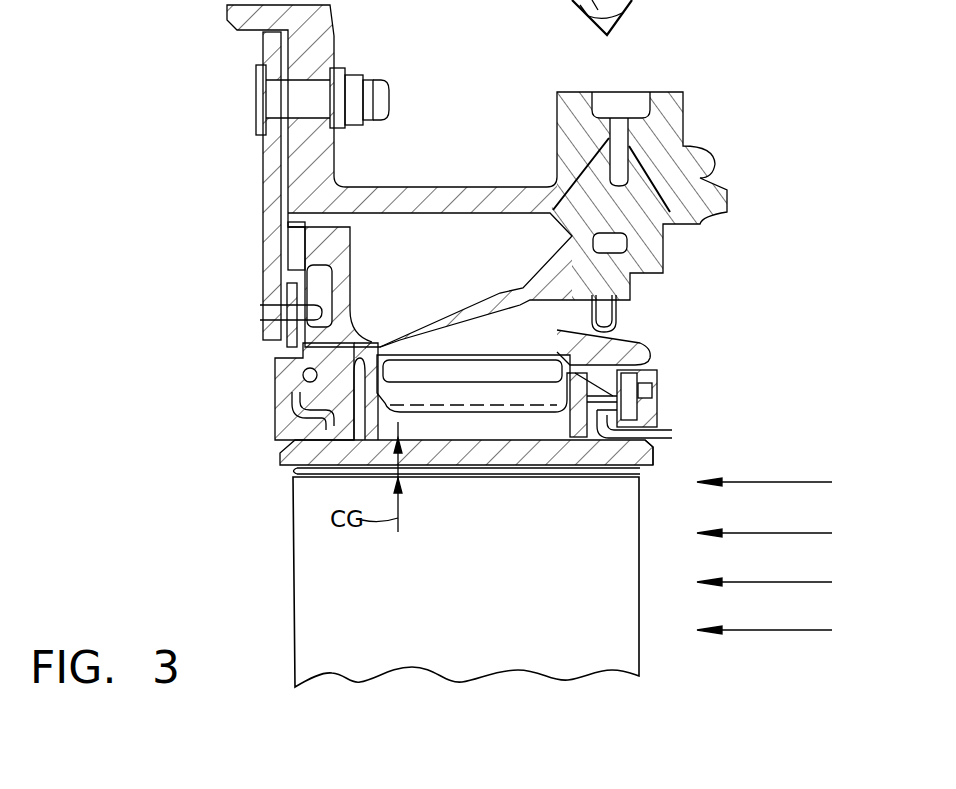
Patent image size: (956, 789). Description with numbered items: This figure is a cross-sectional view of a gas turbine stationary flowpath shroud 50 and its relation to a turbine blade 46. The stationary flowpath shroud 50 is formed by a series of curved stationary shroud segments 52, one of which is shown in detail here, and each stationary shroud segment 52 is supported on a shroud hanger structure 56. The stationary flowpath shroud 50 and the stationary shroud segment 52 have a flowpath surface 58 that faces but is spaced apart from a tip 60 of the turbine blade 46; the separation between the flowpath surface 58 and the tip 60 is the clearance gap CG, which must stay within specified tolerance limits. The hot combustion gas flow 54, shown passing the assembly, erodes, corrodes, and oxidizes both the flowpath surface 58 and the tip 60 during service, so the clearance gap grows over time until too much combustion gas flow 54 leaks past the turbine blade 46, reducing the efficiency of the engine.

The turbine blade 46 is at (316, 605).
The gas turbine stationary flowpath shroud 50 is at (262, 456).
The stationary shroud segment 52 is at (622, 13).
The combustion gas flow 54 is at (763, 482).
The shroud hanger structure 56 is at (254, 186).
The flowpath surface 58 is at (645, 468).
The tip 60 is at (296, 470).